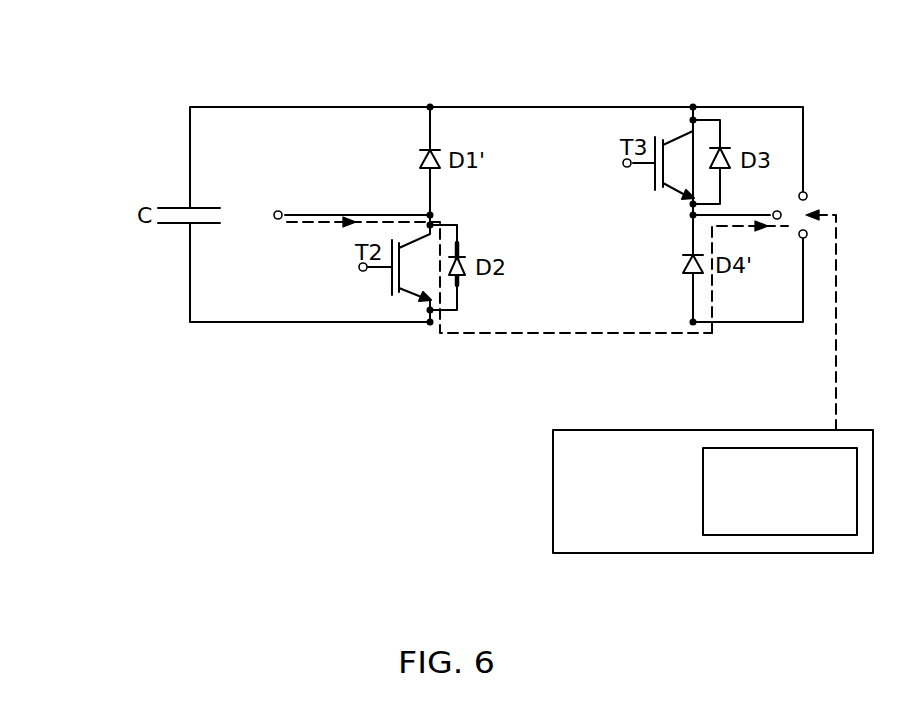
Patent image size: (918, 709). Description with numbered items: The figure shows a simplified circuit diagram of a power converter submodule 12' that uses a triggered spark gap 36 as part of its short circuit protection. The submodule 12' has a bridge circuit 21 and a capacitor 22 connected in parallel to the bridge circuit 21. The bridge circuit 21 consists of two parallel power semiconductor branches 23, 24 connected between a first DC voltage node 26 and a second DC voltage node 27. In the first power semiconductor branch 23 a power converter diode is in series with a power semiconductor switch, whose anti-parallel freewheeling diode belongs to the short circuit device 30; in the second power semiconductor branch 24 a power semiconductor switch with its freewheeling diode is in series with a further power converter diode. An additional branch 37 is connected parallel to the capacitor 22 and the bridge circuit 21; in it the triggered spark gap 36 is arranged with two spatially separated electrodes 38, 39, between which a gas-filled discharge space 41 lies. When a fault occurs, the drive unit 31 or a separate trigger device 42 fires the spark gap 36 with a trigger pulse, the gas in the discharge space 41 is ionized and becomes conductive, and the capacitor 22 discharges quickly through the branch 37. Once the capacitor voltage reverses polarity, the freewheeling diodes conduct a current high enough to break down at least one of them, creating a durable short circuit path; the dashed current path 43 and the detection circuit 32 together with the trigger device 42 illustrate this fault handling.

The power converter submodule 12' is at (248, 198).
The capacitor 22 is at (121, 192).
The first power semiconductor branch 23 is at (443, 124).
The first DC voltage node 26 is at (545, 107).
The second power semiconductor branch 24 is at (682, 108).
The additional branch 37 is at (748, 107).
The electrode 38 is at (808, 193).
The triggered spark gap 36 is at (832, 192).
The discharge space 41 is at (806, 206).
The electrode 39 is at (808, 235).
The short circuit device 30 is at (485, 234).
The bridge circuit 21 is at (428, 350).
The current path 43 is at (560, 335).
The second DC voltage node 27 is at (643, 326).
The drive unit 31 is at (524, 517).
The detection circuit 32 is at (827, 535).
The trigger device 42 is at (827, 535).